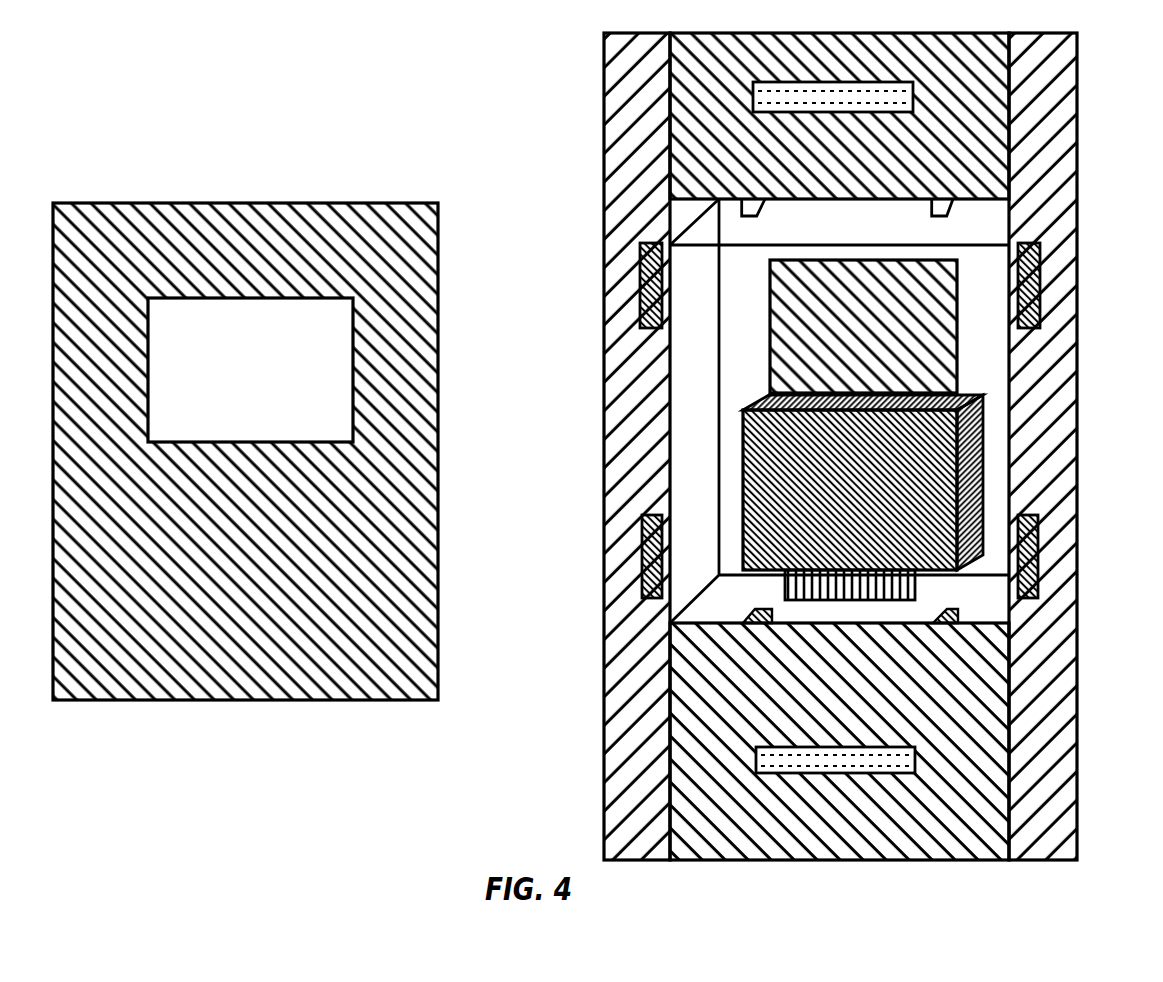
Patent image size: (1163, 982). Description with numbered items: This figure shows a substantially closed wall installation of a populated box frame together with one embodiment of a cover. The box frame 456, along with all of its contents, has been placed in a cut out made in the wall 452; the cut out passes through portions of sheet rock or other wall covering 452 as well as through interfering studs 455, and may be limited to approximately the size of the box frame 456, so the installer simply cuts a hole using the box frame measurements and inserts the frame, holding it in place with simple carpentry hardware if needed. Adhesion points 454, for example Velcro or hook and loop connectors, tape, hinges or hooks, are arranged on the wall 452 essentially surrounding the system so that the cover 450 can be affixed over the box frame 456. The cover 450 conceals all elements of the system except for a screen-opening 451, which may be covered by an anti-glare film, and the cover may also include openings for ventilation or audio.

The cover 450 is at (377, 201).
The screen-opening 451 is at (264, 302).
The wall 452 is at (603, 118).
The adhesion points 454 is at (641, 318).
The studs 455 is at (641, 585).
The box frame 456 is at (712, 355).